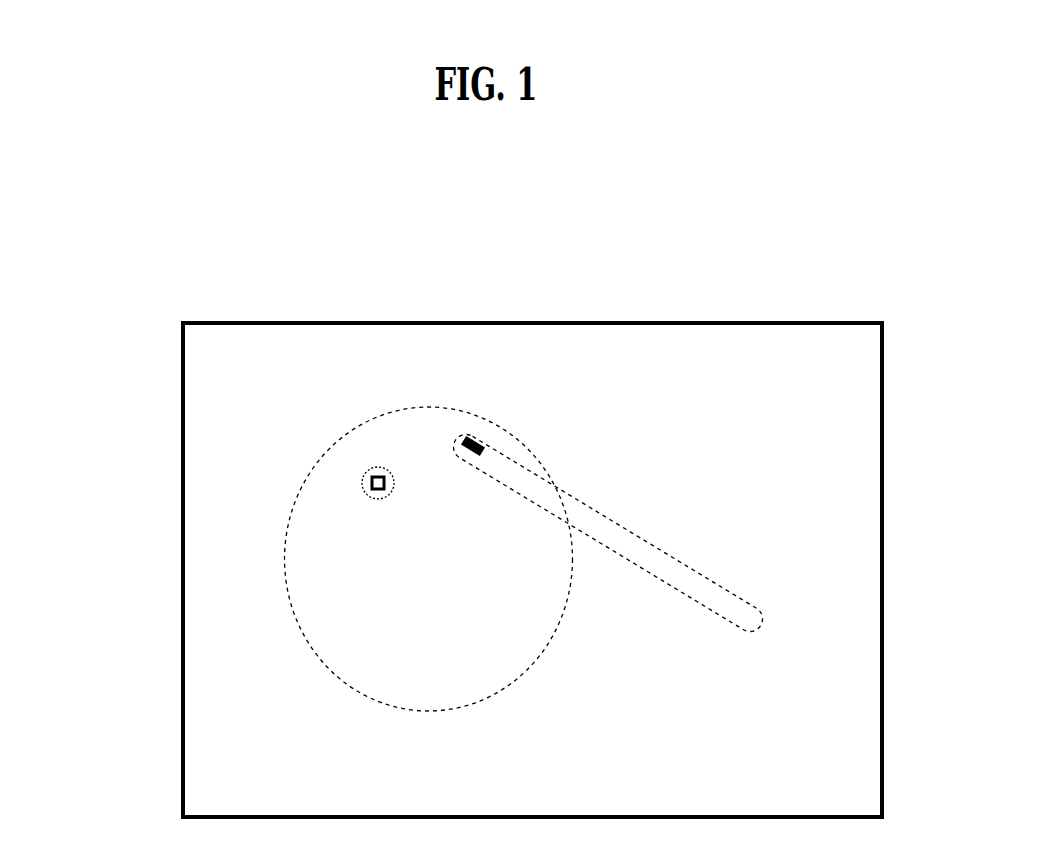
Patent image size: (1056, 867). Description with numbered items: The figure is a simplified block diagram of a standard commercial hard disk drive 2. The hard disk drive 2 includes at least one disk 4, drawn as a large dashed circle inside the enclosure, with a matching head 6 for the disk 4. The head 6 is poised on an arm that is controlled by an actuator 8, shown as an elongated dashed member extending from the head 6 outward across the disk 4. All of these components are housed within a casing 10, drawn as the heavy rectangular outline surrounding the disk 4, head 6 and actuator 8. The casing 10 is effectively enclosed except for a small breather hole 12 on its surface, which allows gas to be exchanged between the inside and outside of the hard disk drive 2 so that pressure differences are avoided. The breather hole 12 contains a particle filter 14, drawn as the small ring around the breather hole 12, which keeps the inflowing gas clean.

The hard disk drive 2 is at (705, 242).
The disk 4 is at (300, 632).
The head 6 is at (466, 438).
The actuator 8 is at (727, 605).
The casing 10 is at (182, 430).
The breather hole 12 is at (370, 475).
The particle filter 14 is at (362, 485).